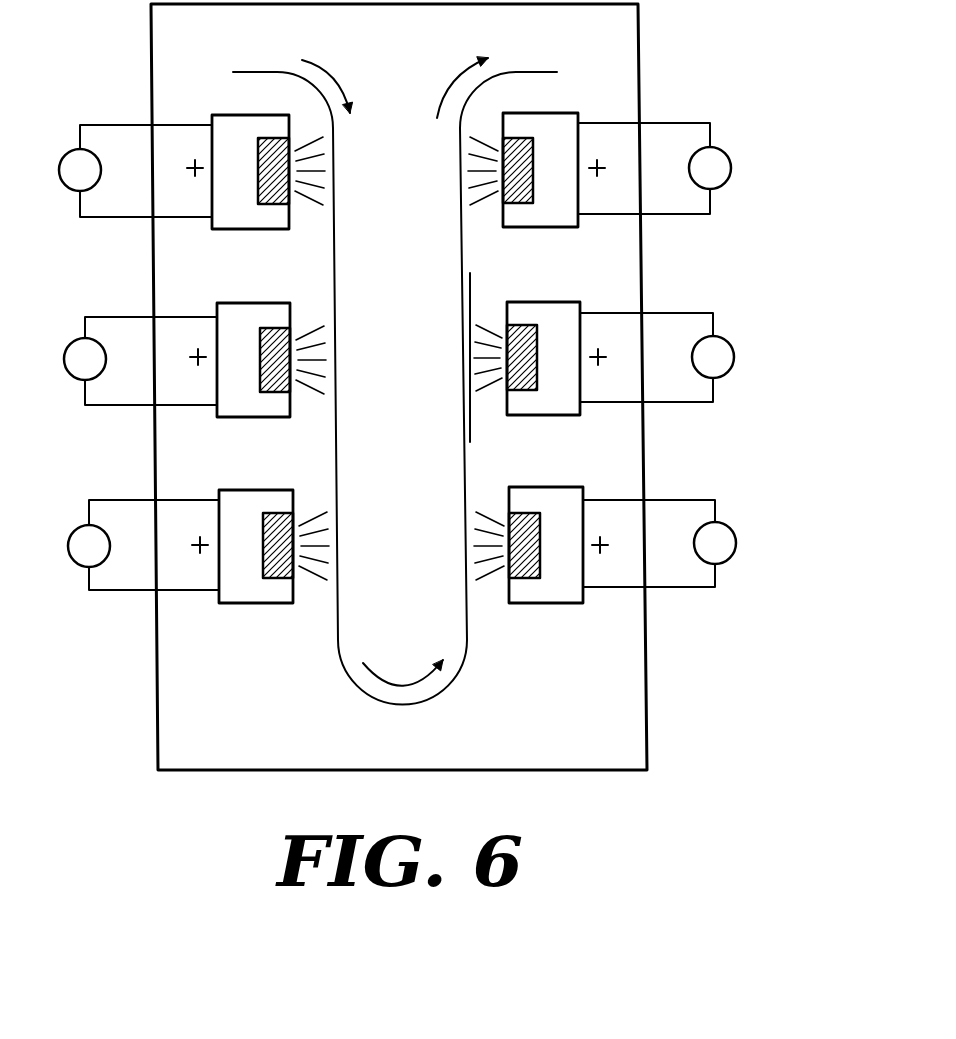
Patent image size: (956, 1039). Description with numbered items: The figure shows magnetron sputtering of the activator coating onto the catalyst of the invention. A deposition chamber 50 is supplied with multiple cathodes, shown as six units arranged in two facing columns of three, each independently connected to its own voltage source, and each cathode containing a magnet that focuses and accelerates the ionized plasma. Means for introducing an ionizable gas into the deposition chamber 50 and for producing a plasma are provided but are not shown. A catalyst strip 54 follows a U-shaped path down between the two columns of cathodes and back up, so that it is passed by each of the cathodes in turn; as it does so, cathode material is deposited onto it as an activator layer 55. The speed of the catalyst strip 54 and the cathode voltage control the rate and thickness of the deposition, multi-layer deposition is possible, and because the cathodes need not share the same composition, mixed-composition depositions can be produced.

The deposition chamber 50 is at (250, 695).
The catalyst strip 54 is at (270, 72).
The activator layer 55 is at (470, 356).